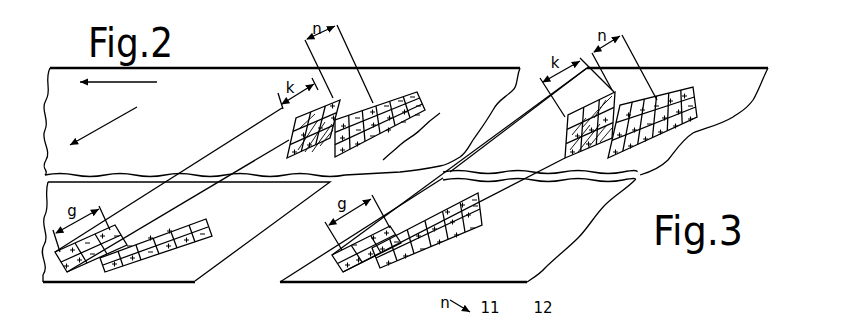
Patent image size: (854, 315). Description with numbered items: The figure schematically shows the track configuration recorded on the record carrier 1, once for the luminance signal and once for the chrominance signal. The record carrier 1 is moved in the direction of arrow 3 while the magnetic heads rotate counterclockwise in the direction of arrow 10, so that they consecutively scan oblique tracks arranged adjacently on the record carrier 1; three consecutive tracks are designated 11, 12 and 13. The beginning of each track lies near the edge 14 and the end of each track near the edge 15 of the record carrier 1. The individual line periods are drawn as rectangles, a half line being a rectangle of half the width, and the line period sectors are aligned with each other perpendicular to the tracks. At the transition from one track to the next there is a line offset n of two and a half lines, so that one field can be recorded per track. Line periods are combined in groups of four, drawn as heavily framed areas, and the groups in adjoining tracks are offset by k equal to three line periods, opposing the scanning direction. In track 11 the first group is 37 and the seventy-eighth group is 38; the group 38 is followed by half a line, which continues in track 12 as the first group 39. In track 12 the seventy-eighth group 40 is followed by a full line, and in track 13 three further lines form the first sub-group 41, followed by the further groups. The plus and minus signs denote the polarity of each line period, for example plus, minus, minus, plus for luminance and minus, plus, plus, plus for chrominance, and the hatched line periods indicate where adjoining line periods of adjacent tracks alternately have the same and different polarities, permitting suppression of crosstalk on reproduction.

In FIG. 2, the record carrier 1 is at (281, 207).
In FIG. 3, the record carrier 1 is at (588, 216).
In FIG. 2, the direction of movement of the record carrier 3 is at (110, 84).
In FIG. 2, the direction of rotation of the magnetic heads 10 is at (103, 125).
In FIG. 2, the first track 11 is at (345, 97).
In FIG. 3, the first track 11 is at (622, 98).
In FIG. 2, the second track 12 is at (385, 97).
In FIG. 3, the second track 12 is at (663, 93).
In FIG. 2, the third track 13 is at (425, 98).
In FIG. 3, the third track 13 is at (698, 98).
In FIG. 2, the edge of the record carrier 14 is at (192, 70).
In FIG. 3, the edge of the record carrier 14 is at (730, 73).
In FIG. 2, the edge of the record carrier 15 is at (197, 277).
In FIG. 3, the edge of the record carrier 15 is at (480, 278).
In FIG. 2, the first group 37 is at (318, 92).
In FIG. 2, the seventy-eighth group 38 is at (90, 263).
In FIG. 2, the first group 39 is at (362, 93).
In FIG. 2, the seventy-eighth group 40 is at (127, 262).
In FIG. 2, the first sub-group 41 is at (401, 90).